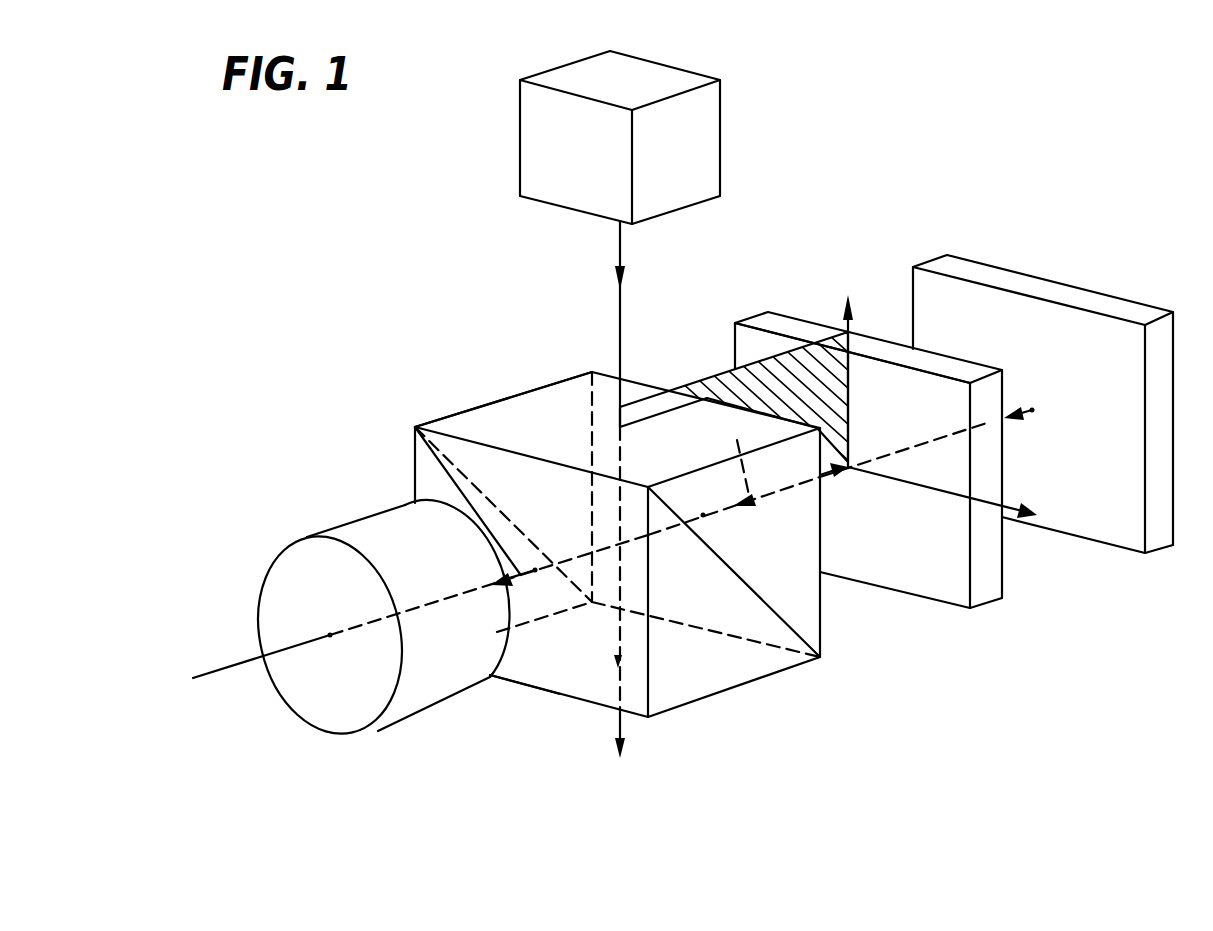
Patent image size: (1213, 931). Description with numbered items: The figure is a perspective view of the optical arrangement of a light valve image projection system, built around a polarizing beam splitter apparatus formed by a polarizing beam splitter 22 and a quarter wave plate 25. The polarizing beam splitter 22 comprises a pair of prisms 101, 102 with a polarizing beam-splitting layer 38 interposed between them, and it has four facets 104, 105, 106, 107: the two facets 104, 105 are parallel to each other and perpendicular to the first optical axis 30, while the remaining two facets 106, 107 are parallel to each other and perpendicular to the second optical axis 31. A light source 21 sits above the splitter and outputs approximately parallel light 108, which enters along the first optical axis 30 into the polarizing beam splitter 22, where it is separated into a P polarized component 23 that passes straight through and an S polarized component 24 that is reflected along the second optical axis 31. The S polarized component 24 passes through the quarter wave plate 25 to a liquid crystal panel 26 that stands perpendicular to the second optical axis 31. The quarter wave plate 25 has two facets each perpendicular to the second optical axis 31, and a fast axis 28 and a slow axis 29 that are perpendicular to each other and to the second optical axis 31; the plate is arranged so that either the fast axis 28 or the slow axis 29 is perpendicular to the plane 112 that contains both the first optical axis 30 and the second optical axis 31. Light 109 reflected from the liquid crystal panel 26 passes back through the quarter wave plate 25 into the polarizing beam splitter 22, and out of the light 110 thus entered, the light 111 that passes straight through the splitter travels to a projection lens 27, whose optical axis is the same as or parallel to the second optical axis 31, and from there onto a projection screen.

The light source 21 is at (713, 137).
The polarizing beam splitter 22 is at (485, 410).
The P polarized component 23 is at (613, 723).
The S polarized component 24 is at (838, 476).
The quarter wave plate 25 is at (760, 318).
The liquid crystal panel 26 is at (938, 260).
The projection lens 27 is at (352, 527).
The fast axis 28 is at (1015, 510).
The slow axis 29 is at (845, 318).
The first optical axis 30 is at (623, 308).
The second optical axis 31 is at (775, 495).
The polarizing beam-splitting layer 38 is at (800, 640).
The prism 101 is at (810, 620).
The prism 102 is at (723, 677).
The facet 104 is at (452, 420).
The facet 105 is at (663, 697).
The facet 106 is at (603, 390).
The facet 107 is at (513, 670).
The light 108 is at (619, 242).
The light reflected from the liquid crystal panel 109 is at (1028, 413).
The light entered 110 is at (737, 458).
The light to be passed straight 111 is at (418, 485).
The plane 112 is at (705, 388).